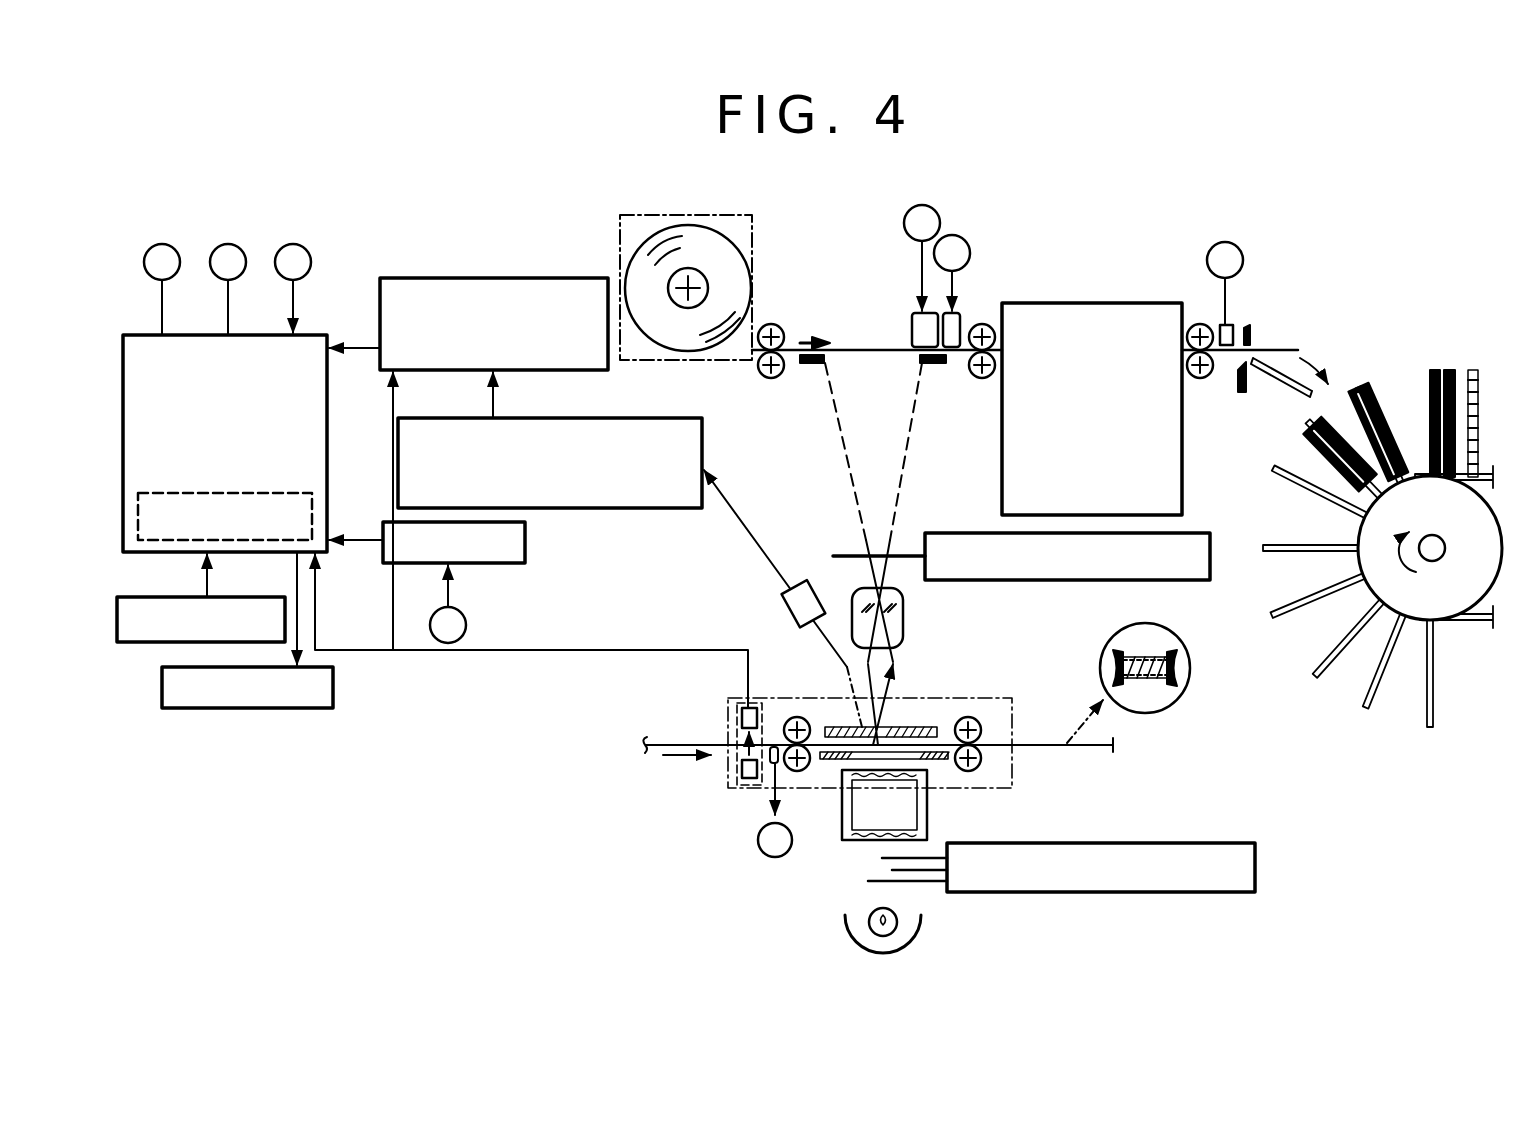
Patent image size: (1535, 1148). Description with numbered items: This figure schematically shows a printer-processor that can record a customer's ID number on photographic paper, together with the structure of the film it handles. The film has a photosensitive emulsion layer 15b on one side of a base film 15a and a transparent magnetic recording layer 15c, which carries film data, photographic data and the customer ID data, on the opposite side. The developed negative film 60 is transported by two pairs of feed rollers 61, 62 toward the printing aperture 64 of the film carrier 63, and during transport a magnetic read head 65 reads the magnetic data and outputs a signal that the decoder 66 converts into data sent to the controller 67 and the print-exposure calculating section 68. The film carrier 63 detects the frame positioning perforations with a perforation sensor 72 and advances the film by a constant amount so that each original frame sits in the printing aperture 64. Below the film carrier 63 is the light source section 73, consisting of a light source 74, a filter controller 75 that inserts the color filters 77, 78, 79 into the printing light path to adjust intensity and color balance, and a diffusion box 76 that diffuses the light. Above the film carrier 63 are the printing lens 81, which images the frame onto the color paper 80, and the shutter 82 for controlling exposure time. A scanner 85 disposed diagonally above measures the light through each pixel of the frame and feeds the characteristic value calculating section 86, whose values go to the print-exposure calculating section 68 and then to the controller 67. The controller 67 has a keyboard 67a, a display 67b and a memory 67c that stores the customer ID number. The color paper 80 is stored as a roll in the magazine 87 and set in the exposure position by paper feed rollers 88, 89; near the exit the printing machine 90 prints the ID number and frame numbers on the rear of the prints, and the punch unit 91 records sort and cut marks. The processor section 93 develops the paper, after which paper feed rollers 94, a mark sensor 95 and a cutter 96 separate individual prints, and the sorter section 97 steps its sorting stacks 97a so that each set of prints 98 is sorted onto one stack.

The controller 67 is at (327, 422).
The keyboard 67a is at (133, 642).
The display 67b is at (336, 690).
The memory 67c is at (312, 522).
The print-exposure calculating section 68 is at (565, 370).
The characteristic value calculating section 86 is at (637, 418).
The decoder 66 is at (500, 563).
The magazine 87 is at (752, 235).
The paper feed rollers 88 is at (781, 321).
The color paper 80 is at (842, 350).
The punch unit 91 is at (912, 330).
The printing machine 90 is at (960, 322).
The paper feed rollers 89 is at (975, 380).
The processor section 93 is at (1080, 303).
The paper feed rollers 94 is at (1196, 320).
The mark sensor 95 is at (1235, 335).
The cutter 96 is at (1251, 335).
The sorter section 97 is at (1453, 364).
The sorting stacks 97a is at (1475, 390).
The prints 98 is at (1445, 372).
The shutter 82 is at (833, 550).
The printing lens 81 is at (905, 620).
The scanner 85 is at (786, 604).
The film carrier 63 is at (1003, 696).
The developed negative film 60 is at (650, 752).
The perforation sensor 72 is at (745, 783).
The magnetic read head 65 is at (774, 747).
The feed rollers 61 is at (799, 716).
The printing aperture 64 is at (897, 727).
The feed rollers 62 is at (970, 716).
The diffusion box 76 is at (842, 812).
The base film 15a is at (1165, 672).
The photosensitive emulsion layer 15b is at (1160, 655).
The magnetic recording layer 15c is at (1150, 682).
The filter controller 75 is at (1080, 892).
The color filter 79 is at (917, 858).
The color filter 78 is at (892, 870).
The color filter 77 is at (868, 881).
The light source section 73 is at (782, 878).
The light source 74 is at (905, 912).